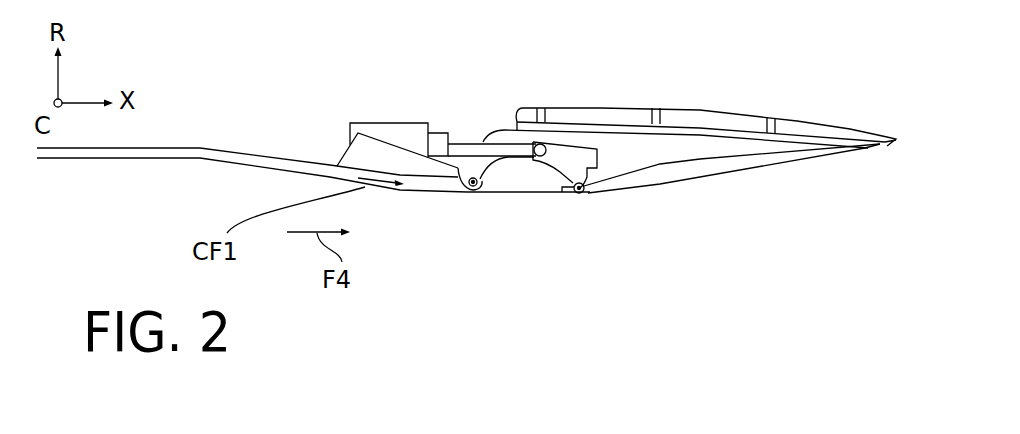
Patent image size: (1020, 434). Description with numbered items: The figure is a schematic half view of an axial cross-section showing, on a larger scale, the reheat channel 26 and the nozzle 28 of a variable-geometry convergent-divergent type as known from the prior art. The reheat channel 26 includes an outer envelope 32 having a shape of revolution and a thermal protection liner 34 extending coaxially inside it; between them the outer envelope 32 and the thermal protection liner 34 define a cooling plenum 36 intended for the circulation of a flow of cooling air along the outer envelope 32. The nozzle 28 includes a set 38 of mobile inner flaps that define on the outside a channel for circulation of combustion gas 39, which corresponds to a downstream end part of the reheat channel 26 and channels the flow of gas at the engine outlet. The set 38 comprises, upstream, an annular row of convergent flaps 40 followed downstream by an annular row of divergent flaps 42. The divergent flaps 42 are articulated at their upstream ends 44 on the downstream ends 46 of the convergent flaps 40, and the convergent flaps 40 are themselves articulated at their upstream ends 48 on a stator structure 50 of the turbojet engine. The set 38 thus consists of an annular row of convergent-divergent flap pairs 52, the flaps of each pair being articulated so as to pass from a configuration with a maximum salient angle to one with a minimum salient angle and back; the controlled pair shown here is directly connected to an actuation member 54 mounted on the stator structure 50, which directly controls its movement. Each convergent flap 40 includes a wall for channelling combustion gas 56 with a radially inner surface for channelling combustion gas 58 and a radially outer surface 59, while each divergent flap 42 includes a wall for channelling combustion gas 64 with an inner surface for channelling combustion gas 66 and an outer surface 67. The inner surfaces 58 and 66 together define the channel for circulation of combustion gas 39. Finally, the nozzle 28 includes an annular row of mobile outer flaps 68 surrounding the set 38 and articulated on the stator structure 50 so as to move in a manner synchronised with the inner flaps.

The reheat channel 26 is at (124, 206).
The nozzle 28 is at (779, 68).
The outer envelope 32 is at (230, 150).
The thermal protection liner 34 is at (240, 168).
The cooling plenum 36 is at (265, 160).
The set of mobile inner flaps 38 is at (590, 380).
The channel for circulation of combustion gas 39 is at (813, 208).
The convergent flaps 40 is at (504, 201).
The divergent flaps 42 is at (657, 194).
The upstream ends of the divergent flaps 44 is at (583, 197).
The downstream ends of the convergent flaps 46 is at (563, 197).
The upstream ends of the convergent flaps 48 is at (462, 197).
The stator structure 50 is at (307, 155).
The convergent-divergent flap pairs 52 is at (642, 333).
The actuation members 54 is at (468, 142).
The wall for channelling combustion gas 56 is at (487, 195).
The inner surface for channelling combustion gas 58 is at (540, 194).
The outer surface 59 is at (547, 190).
The wall for channelling combustion gas 64 is at (743, 173).
The inner surface for channelling combustion gas 66 is at (842, 156).
The outer surface 67 is at (833, 152).
The mobile outer flaps 68 is at (725, 103).